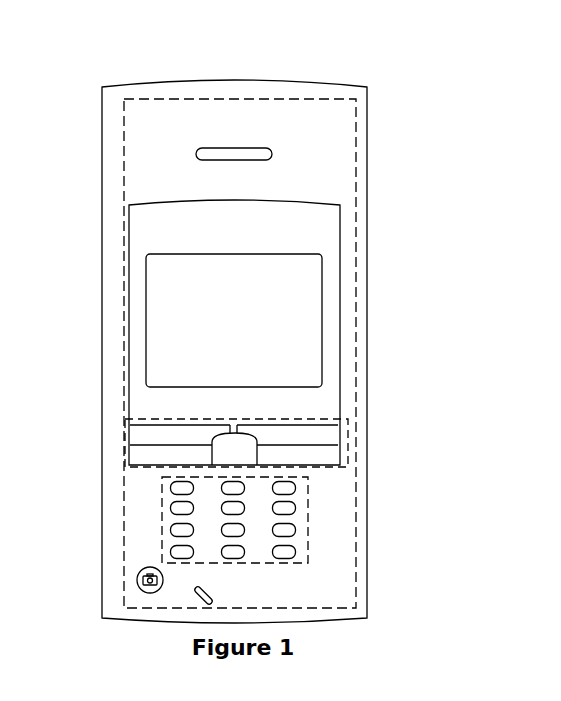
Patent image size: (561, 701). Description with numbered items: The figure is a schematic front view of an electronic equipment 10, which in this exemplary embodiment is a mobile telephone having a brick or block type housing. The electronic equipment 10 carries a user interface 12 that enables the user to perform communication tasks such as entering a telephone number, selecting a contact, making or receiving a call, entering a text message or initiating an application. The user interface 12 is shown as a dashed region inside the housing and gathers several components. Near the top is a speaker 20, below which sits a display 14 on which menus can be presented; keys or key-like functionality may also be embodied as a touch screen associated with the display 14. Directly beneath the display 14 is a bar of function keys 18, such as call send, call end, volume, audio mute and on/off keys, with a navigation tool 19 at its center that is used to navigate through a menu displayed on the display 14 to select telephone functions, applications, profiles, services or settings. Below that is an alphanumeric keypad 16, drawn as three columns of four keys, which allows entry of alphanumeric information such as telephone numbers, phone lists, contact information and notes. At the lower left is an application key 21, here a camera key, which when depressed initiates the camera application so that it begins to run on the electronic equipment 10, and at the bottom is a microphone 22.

The electronic equipment 10 is at (293, 78).
The user interface 12 is at (357, 212).
The display 14 is at (234, 332).
The alphanumeric keypad 16 is at (310, 530).
The function keys 18 is at (347, 440).
The navigation tool 19 is at (233, 441).
The speaker 20 is at (185, 154).
The application key 21 is at (137, 580).
The microphone 22 is at (213, 600).